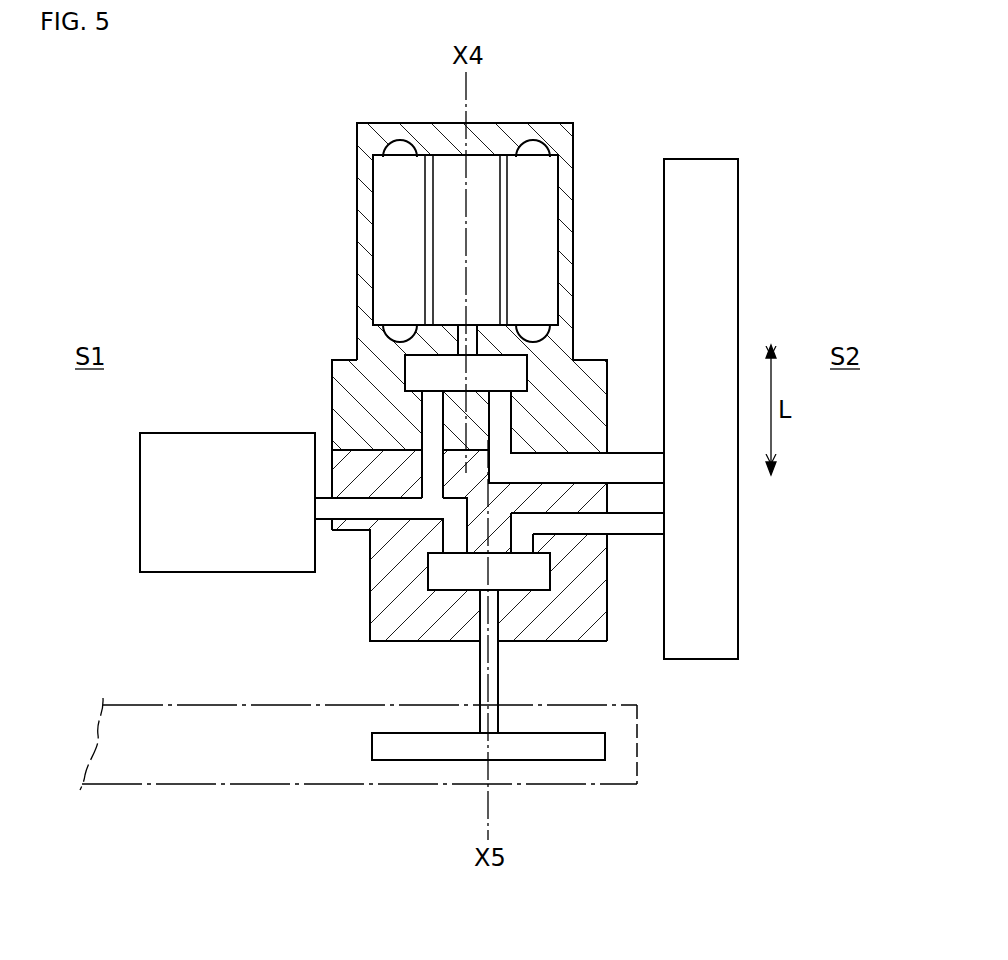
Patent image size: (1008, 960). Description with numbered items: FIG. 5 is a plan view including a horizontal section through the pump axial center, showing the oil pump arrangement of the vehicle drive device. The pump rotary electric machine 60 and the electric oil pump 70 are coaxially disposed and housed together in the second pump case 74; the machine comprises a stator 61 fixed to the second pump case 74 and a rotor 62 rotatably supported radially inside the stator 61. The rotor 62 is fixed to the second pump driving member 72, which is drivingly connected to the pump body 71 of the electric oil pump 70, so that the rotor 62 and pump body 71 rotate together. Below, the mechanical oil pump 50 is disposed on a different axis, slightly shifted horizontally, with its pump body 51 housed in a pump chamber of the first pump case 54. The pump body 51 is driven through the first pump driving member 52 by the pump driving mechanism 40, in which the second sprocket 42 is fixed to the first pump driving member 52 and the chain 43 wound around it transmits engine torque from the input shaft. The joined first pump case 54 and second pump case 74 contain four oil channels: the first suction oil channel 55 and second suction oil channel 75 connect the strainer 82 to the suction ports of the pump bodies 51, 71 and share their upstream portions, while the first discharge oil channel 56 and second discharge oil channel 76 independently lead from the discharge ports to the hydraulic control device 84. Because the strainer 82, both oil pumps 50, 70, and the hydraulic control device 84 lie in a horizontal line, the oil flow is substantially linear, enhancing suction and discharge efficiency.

The pump driving mechanism 40 is at (313, 788).
The second sprocket 42 is at (428, 756).
The chain 43 is at (620, 788).
The mechanical oil pump 50 is at (460, 592).
The pump body 51 is at (530, 583).
The first pump driving member 52 is at (480, 672).
The first pump case 54 is at (370, 627).
The first suction oil channel 55 is at (453, 537).
The first discharge oil channel 56 is at (568, 530).
The pump rotary electric machine 60 is at (362, 240).
The stator 61 is at (423, 158).
The rotor 62 is at (495, 158).
The electric oil pump 70 is at (401, 493).
The pump body 71 is at (525, 370).
The second pump driving member 72 is at (460, 336).
The second pump case 74 is at (333, 370).
The second suction oil channel 75 is at (430, 425).
The second discharge oil channel 76 is at (505, 418).
The strainer 82 is at (168, 482).
The hydraulic control device 84 is at (728, 215).